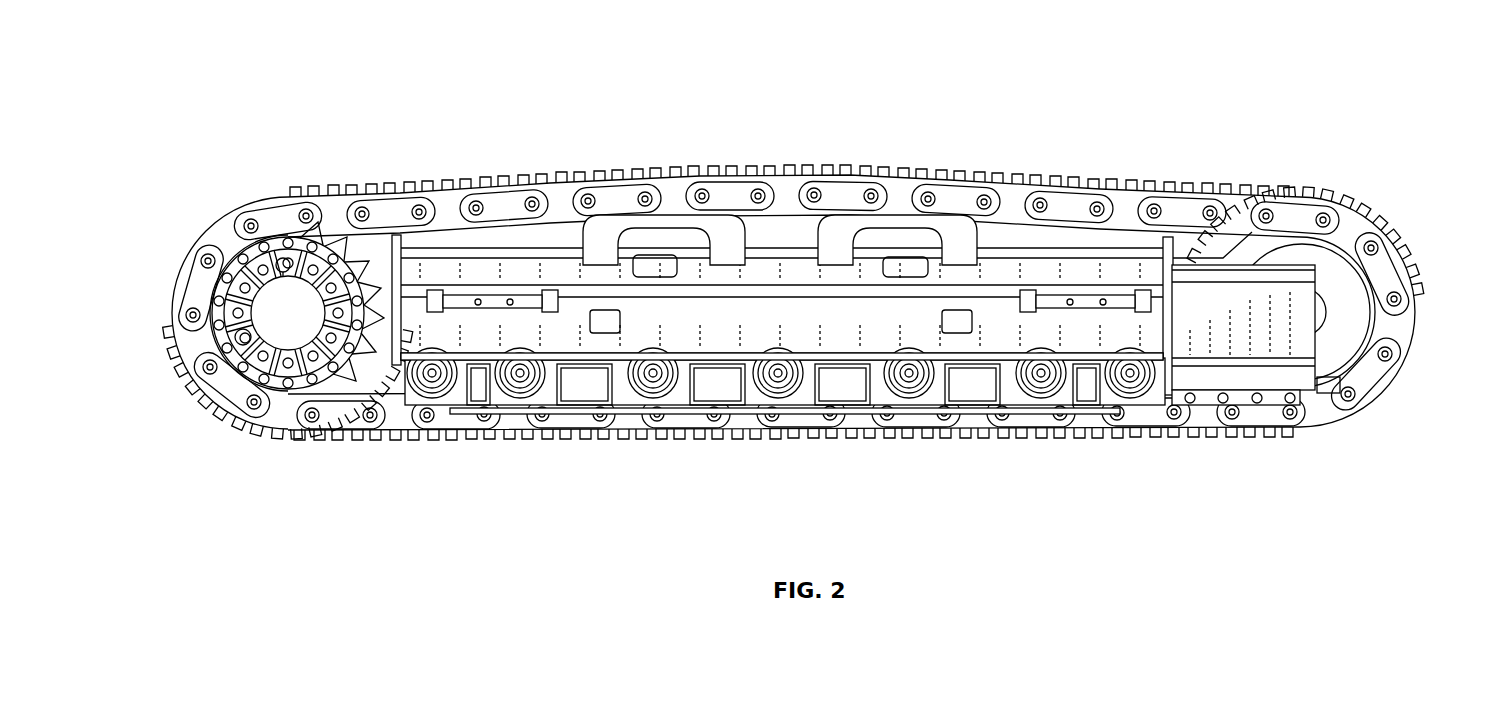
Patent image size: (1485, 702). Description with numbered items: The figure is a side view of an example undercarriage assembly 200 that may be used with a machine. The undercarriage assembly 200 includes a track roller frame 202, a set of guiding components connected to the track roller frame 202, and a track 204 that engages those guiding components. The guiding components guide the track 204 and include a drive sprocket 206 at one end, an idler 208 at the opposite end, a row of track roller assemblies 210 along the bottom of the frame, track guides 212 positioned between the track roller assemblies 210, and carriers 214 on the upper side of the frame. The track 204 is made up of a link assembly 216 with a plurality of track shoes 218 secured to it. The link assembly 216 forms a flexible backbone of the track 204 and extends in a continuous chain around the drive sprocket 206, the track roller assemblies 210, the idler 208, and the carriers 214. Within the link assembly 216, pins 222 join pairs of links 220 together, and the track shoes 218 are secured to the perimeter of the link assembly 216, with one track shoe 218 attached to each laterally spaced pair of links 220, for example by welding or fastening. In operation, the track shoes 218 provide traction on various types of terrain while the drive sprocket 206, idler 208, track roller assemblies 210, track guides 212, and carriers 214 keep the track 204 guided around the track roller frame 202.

The undercarriage assembly 200 is at (247, 52).
The track roller frame 202 is at (706, 312).
The track 204 is at (1248, 192).
The drive sprocket 206 is at (288, 313).
The idler 208 is at (1343, 318).
The track roller assemblies 210 is at (433, 400).
The track guides 212 is at (585, 396).
The carriers 214 is at (598, 242).
The link assembly 216 is at (441, 196).
The track shoes 218 is at (795, 170).
The links 220 is at (302, 214).
The pins 222 is at (312, 431).